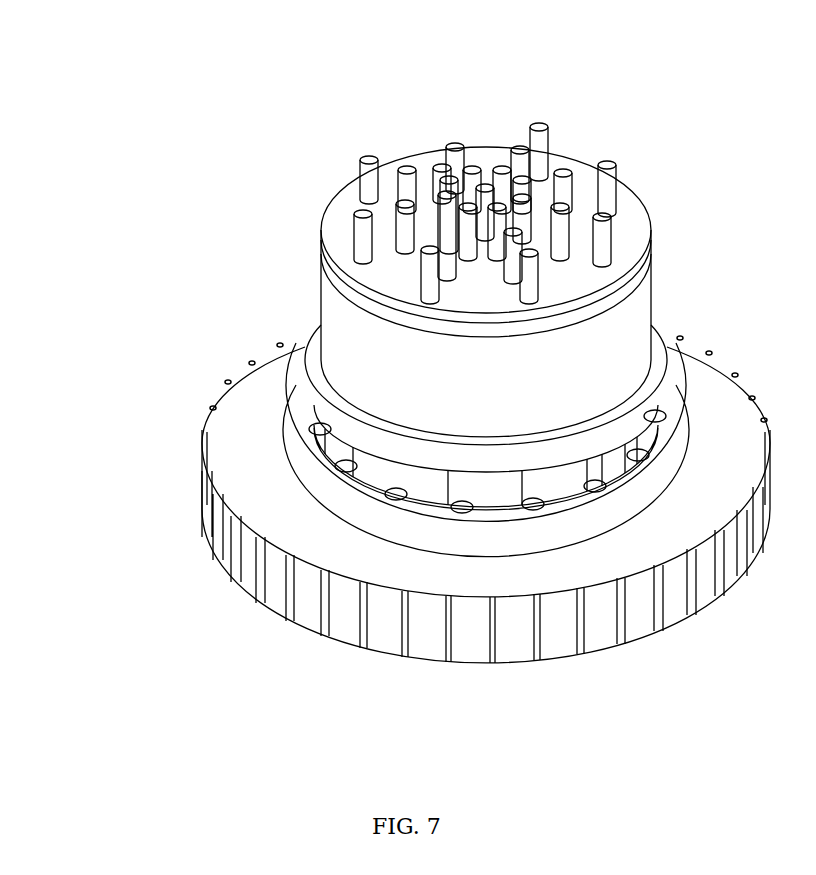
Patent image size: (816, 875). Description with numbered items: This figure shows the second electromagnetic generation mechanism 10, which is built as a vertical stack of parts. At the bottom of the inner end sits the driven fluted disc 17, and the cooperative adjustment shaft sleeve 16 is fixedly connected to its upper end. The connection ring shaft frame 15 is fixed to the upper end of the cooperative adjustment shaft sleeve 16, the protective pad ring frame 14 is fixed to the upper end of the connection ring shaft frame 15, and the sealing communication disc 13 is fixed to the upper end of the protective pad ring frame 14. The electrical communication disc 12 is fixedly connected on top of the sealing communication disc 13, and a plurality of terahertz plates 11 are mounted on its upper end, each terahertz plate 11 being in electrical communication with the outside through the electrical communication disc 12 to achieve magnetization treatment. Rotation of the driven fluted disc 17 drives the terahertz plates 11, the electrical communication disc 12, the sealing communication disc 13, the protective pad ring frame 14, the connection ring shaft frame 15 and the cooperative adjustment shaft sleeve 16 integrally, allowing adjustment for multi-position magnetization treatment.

The second electromagnetic generation mechanism 10 is at (636, 232).
The terahertz plate 11 is at (410, 230).
The electrical communication disc 12 is at (400, 295).
The sealing communication disc 13 is at (378, 373).
The protective pad ring frame 14 is at (380, 437).
The connection ring shaft frame 15 is at (393, 483).
The cooperative adjustment shaft sleeve 16 is at (367, 513).
The driven fluted disc 17 is at (375, 548).